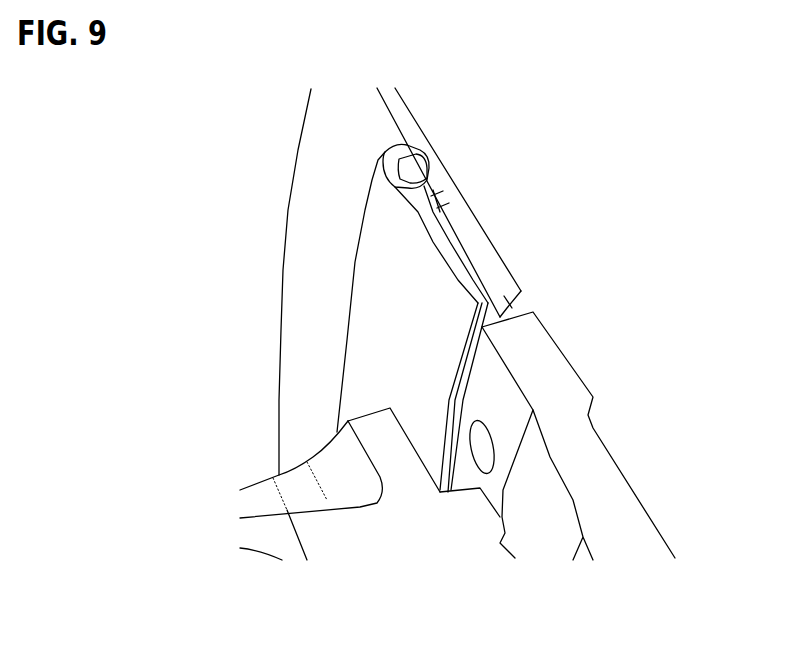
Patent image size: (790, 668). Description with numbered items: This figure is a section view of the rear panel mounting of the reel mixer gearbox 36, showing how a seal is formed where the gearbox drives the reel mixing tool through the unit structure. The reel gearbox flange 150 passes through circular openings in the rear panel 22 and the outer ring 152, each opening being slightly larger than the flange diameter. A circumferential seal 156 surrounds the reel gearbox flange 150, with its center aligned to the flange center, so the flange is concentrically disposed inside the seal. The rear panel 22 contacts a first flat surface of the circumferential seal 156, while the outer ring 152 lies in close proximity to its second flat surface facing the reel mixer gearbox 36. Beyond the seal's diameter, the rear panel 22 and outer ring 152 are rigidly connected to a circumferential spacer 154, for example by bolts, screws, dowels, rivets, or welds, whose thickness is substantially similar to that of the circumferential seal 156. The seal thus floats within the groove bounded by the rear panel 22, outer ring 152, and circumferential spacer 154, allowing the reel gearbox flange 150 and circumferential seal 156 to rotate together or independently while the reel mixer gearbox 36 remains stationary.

The rear panel 22 is at (477, 216).
The reel mixer gearbox 36 is at (395, 543).
The reel gearbox flange 150 is at (618, 562).
The outer ring 152 is at (348, 285).
The circumferential spacer 154 is at (423, 158).
The circumferential seal 156 is at (483, 270).